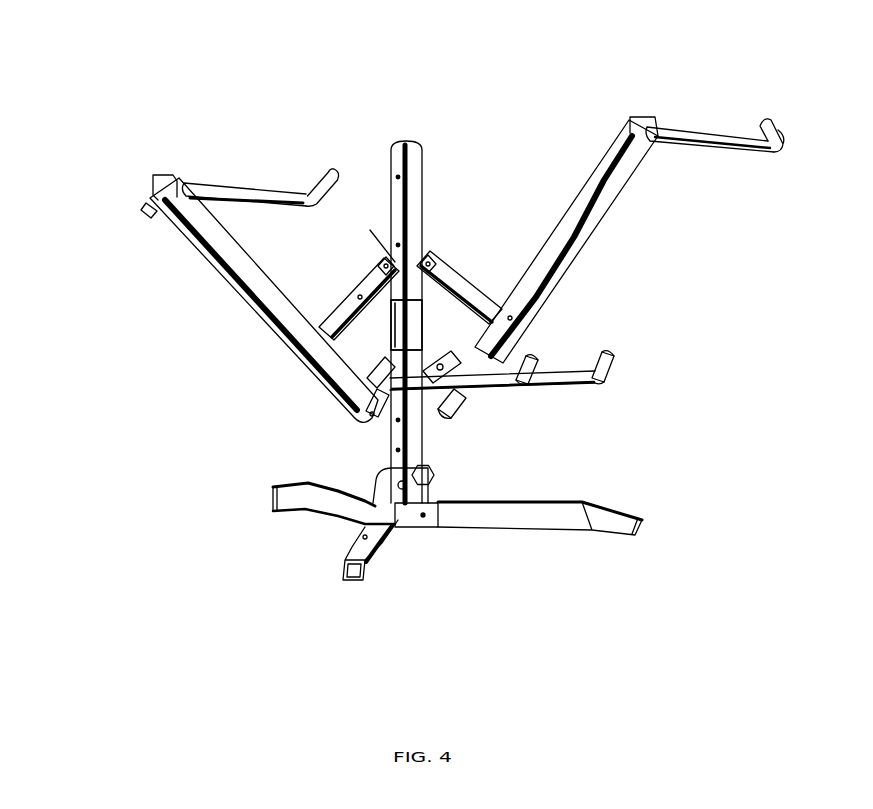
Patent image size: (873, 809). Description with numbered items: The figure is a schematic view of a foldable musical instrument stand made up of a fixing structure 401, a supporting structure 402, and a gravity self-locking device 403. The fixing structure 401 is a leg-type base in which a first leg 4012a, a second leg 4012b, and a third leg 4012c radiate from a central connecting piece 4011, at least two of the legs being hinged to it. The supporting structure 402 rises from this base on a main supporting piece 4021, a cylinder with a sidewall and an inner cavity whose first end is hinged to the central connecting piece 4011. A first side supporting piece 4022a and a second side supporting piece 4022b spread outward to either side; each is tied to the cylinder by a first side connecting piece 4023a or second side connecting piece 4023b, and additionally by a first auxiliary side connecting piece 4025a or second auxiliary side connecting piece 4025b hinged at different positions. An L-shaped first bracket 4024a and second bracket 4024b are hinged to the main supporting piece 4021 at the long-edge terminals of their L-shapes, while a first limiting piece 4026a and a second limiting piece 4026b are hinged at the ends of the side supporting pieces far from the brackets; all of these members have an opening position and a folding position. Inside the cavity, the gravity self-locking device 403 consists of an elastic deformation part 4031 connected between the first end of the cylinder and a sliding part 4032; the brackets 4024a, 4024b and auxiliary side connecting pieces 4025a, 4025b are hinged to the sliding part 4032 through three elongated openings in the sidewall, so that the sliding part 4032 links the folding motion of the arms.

The fixing structure 401 is at (257, 622).
The supporting structure 402 is at (78, 438).
The gravity self-locking device 403 is at (347, 165).
The central connecting piece 4011 is at (482, 533).
The first leg 4012a is at (305, 515).
The second leg 4012b is at (429, 569).
The third leg 4012c is at (591, 536).
The main supporting piece 4021 is at (462, 284).
The first side supporting piece 4022a is at (608, 240).
The second side supporting piece 4022b is at (259, 298).
The first side connecting piece 4023a is at (481, 268).
The second side connecting piece 4023b is at (276, 180).
The first bracket 4024a is at (568, 370).
The second bracket 4024b is at (593, 420).
The first auxiliary side connecting piece 4025a is at (585, 339).
The second auxiliary side connecting piece 4025b is at (275, 393).
The first limiting piece 4026a is at (715, 160).
The second limiting piece 4026b is at (251, 143).
The elastic deformation part 4031 is at (455, 195).
The sliding part 4032 is at (462, 258).